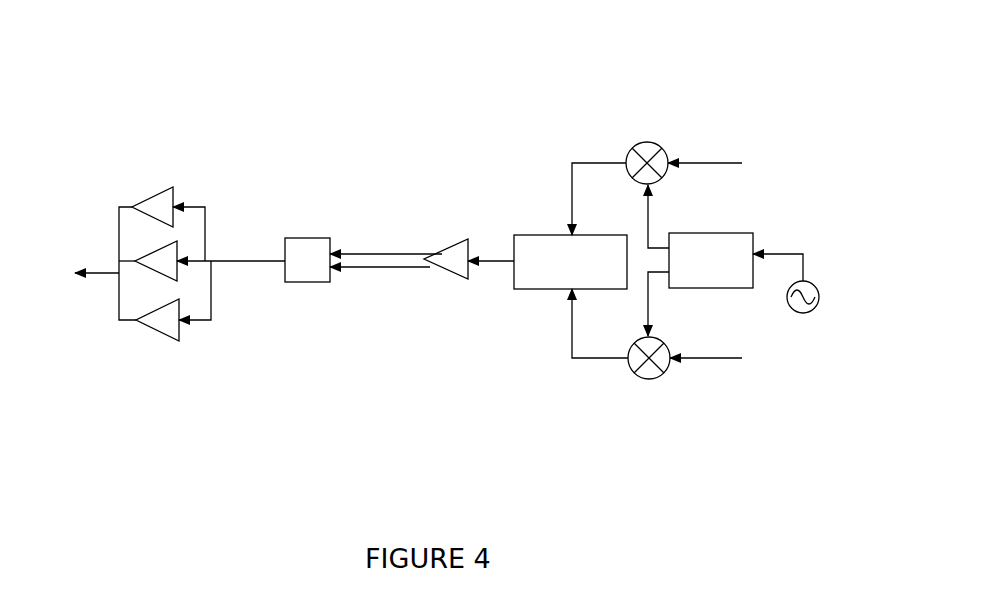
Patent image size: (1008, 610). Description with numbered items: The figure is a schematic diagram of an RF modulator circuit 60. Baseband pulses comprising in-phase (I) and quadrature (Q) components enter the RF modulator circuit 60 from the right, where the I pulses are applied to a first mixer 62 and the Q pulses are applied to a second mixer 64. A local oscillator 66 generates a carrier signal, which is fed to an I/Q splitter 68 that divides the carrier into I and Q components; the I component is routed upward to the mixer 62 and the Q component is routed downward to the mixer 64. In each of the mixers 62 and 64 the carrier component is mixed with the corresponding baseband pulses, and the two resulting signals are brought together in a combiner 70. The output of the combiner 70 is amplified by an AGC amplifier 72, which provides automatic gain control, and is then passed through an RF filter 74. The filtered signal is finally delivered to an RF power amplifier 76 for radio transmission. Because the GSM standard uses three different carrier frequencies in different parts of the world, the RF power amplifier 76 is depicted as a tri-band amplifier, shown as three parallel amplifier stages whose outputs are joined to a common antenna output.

The RF modulator circuit 60 is at (393, 348).
The mixer 62 is at (635, 138).
The mixer 64 is at (633, 367).
The local oscillator 66 is at (813, 287).
The I/Q splitter 68 is at (757, 237).
The combiner 70 is at (533, 228).
The AGC amplifier 72 is at (445, 242).
The RF filter 74 is at (307, 227).
The RF power amplifier 76 is at (188, 337).